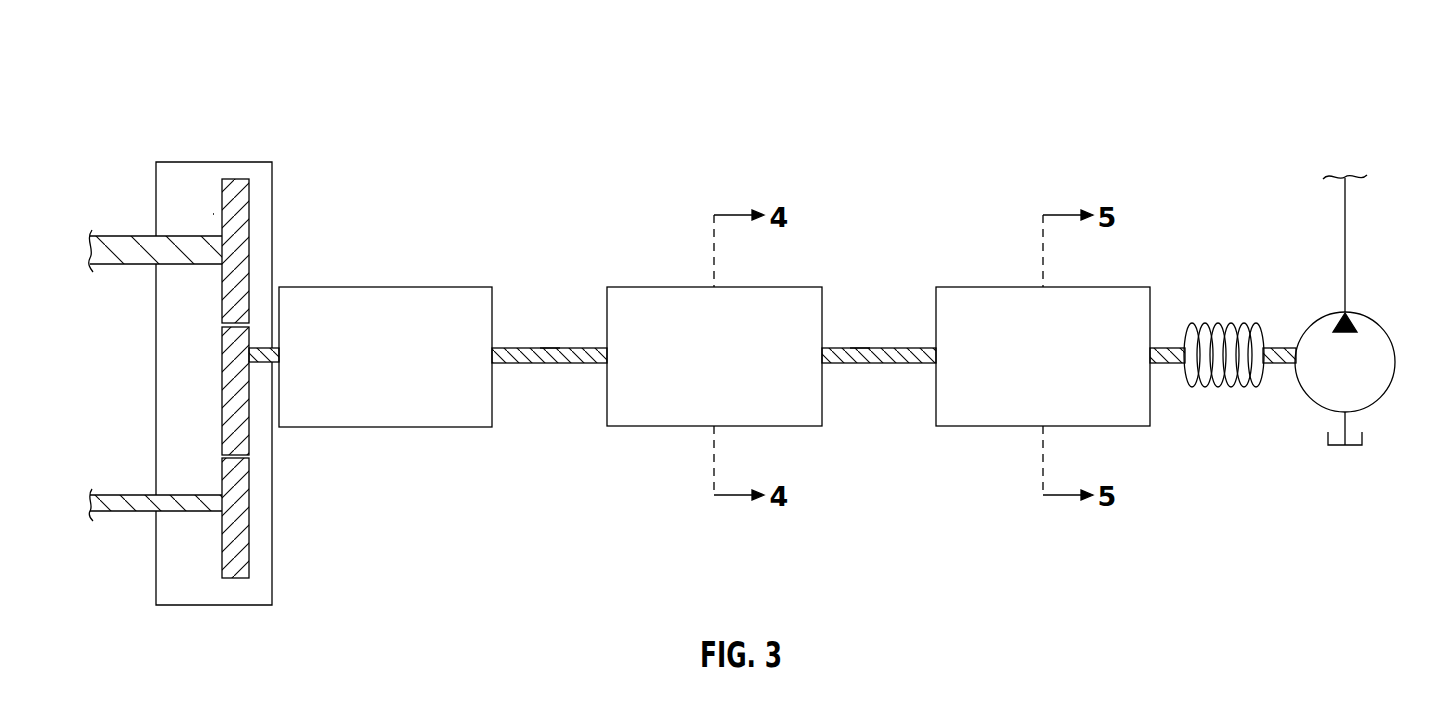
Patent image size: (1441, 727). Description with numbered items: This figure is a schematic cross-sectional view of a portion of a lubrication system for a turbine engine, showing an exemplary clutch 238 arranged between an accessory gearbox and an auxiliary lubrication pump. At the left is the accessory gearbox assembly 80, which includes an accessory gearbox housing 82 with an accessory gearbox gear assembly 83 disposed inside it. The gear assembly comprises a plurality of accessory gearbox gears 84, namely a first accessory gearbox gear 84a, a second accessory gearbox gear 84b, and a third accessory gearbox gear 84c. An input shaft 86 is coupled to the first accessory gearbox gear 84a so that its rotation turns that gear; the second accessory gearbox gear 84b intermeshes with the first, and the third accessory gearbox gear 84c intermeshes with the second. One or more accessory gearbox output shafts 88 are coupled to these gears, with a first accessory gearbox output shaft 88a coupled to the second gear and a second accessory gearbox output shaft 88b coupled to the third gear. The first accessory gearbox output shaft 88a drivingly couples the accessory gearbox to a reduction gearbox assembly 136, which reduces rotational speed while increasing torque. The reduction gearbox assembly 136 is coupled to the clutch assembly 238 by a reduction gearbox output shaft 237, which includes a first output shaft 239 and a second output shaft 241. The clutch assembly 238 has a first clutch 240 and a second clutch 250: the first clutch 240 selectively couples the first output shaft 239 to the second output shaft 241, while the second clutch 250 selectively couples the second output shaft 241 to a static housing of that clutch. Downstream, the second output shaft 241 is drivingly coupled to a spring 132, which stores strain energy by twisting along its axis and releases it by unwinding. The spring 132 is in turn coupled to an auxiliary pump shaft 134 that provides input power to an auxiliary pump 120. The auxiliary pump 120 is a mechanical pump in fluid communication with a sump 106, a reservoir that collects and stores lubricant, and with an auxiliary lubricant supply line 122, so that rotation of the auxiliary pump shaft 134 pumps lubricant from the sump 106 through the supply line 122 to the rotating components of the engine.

The accessory gearbox assembly 80 is at (215, 161).
The accessory gearbox housing 82 is at (213, 606).
The accessory gearbox gear assembly 83 is at (213, 214).
The accessory gearbox gears 84 is at (250, 192).
The first accessory gearbox gear 84a is at (250, 245).
The second accessory gearbox gear 84b is at (250, 432).
The third accessory gearbox gear 84c is at (250, 520).
The input shaft 86 is at (100, 268).
The accessory gearbox output shafts 88 is at (259, 346).
The first accessory gearbox output shaft 88a is at (262, 364).
The second accessory gearbox output shaft 88b is at (185, 495).
The reduction gearbox assembly 136 is at (385, 286).
The reduction gearbox output shaft 237 is at (497, 348).
The first output shaft 239 is at (549, 348).
The first clutch 240 is at (668, 286).
The second output shaft 241 is at (858, 348).
The second clutch 250 is at (1003, 286).
The spring 132 is at (1218, 323).
The auxiliary pump shaft 134 is at (1275, 348).
The auxiliary pump 120 is at (1308, 395).
The auxiliary lubricant supply line 122 is at (1352, 314).
The sump 106 is at (1337, 444).
The clutch assembly 238 is at (903, 59).